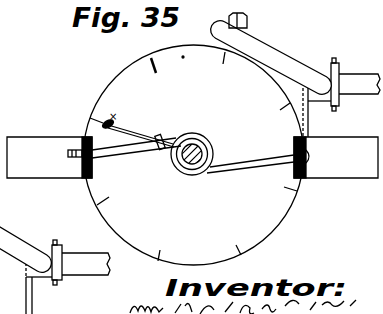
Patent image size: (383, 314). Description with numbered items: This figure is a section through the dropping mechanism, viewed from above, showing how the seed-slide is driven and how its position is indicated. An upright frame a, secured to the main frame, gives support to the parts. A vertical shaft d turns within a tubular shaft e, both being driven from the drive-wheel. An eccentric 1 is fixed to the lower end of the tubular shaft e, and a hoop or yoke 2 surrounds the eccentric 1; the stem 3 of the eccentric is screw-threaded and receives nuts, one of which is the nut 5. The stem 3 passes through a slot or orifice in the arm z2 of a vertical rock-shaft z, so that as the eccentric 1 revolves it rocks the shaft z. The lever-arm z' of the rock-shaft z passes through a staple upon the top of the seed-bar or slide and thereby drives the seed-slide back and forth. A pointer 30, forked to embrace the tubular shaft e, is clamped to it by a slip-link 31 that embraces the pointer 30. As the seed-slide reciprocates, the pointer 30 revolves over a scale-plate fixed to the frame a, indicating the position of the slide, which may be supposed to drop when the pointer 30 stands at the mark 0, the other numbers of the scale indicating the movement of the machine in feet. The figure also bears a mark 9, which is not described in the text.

The upright frame a is at (192, 157).
The vertical rock-shaft z is at (184, 165).
The lever-arm z' is at (221, 175).
The arm of the rock-shaft z2 is at (161, 142).
The nut 5 is at (244, 19).
The pointer 30 is at (141, 130).
The slip-link 31 is at (162, 131).
The tubular shaft e is at (199, 143).
The vertical shaft d is at (209, 155).
The eccentric 1 is at (197, 156).
The hoop or yoke of the eccentric 2 is at (198, 156).
The stem of the eccentric 3 is at (193, 154).
The dial mark 9 is at (188, 58).
The scale mark 0 is at (283, 178).